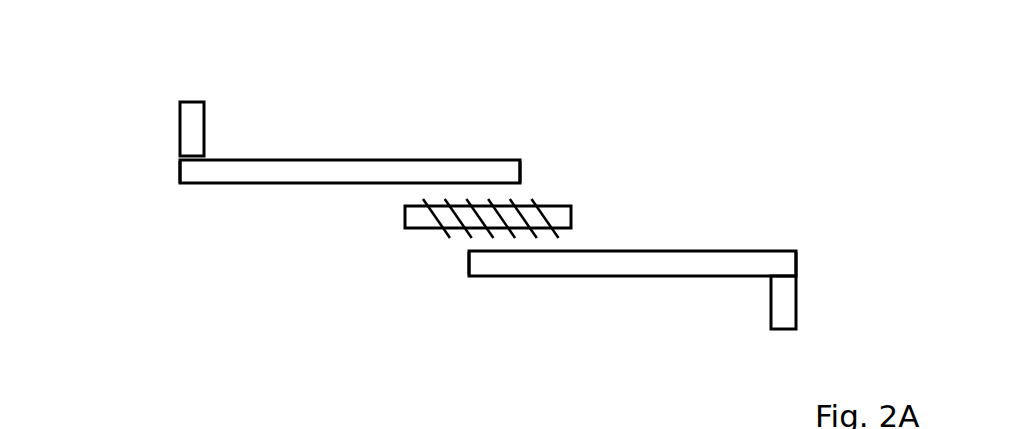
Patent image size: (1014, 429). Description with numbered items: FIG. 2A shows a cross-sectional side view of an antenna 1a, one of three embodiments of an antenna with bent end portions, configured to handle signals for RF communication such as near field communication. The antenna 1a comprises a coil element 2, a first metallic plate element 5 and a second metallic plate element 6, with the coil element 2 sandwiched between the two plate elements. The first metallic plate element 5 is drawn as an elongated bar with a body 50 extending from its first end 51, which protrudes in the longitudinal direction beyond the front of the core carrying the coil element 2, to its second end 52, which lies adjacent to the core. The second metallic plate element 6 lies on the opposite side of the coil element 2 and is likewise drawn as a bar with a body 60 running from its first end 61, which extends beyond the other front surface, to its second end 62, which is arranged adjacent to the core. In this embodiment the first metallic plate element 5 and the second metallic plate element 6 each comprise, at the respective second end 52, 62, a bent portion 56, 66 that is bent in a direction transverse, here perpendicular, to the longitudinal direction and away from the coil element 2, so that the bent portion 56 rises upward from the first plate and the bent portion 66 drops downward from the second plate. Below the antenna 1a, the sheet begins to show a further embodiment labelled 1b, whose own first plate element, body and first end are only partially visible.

The antenna 1a is at (108, 38).
The second contact arrangement 1b is at (86, 408).
The coil element 2 is at (588, 196).
The first metallic plate element 5 is at (143, 191).
The first conductor body 50 is at (302, 173).
The first end 51 is at (523, 171).
The second end 52 is at (178, 179).
The bent portion 56 is at (188, 128).
The second metallic plate element 6 is at (814, 240).
The second conductor body 60 is at (658, 258).
The first end 61 is at (468, 260).
The second end 62 is at (797, 261).
The bent portion 66 is at (788, 313).